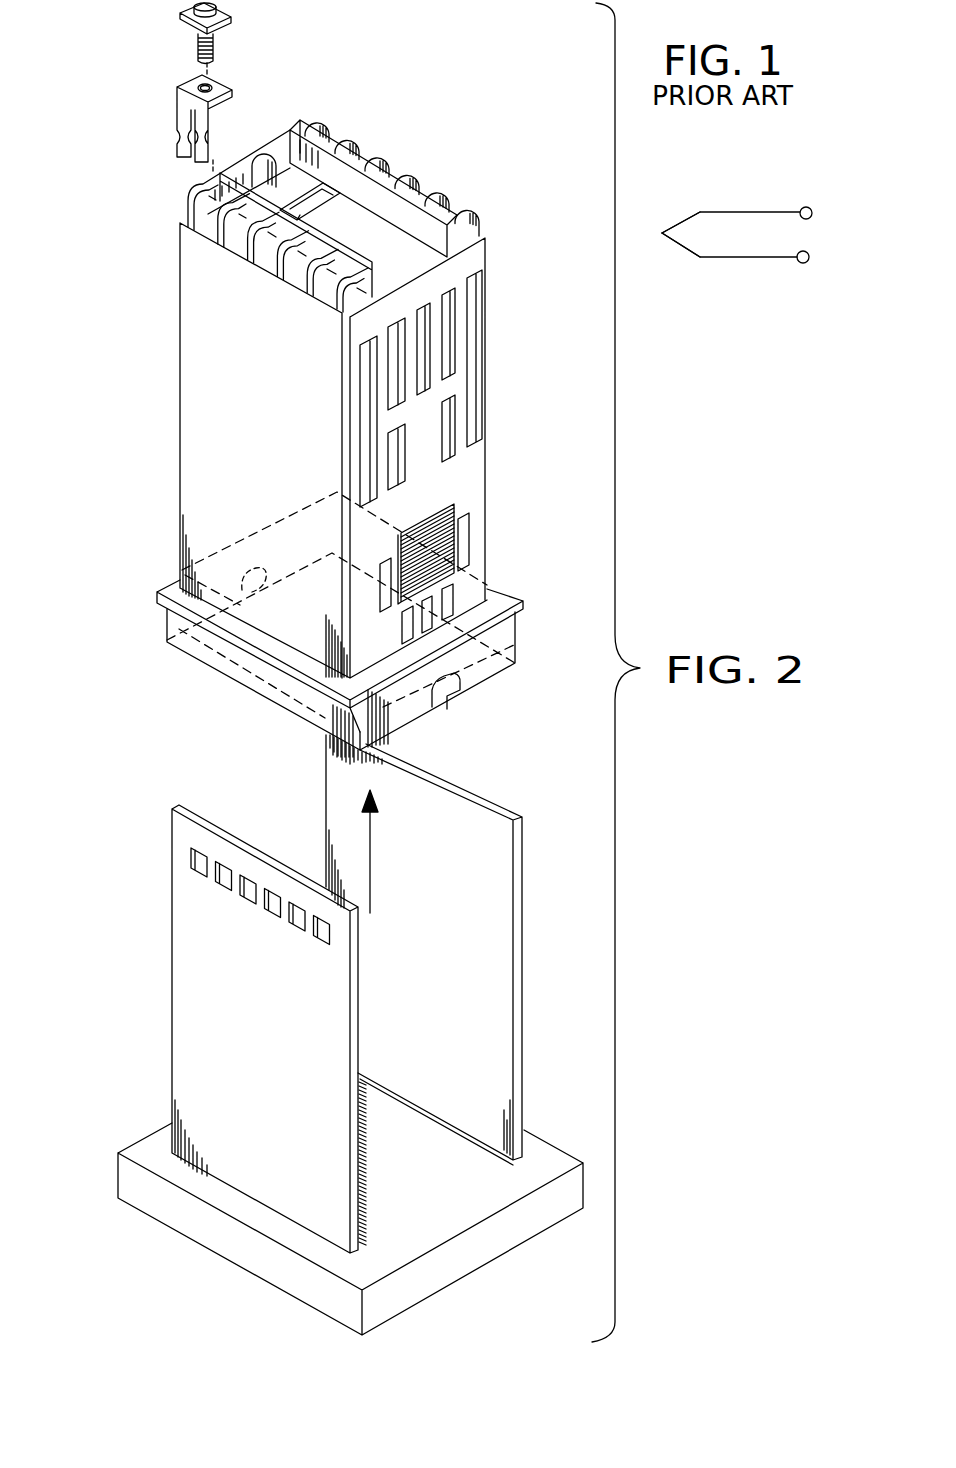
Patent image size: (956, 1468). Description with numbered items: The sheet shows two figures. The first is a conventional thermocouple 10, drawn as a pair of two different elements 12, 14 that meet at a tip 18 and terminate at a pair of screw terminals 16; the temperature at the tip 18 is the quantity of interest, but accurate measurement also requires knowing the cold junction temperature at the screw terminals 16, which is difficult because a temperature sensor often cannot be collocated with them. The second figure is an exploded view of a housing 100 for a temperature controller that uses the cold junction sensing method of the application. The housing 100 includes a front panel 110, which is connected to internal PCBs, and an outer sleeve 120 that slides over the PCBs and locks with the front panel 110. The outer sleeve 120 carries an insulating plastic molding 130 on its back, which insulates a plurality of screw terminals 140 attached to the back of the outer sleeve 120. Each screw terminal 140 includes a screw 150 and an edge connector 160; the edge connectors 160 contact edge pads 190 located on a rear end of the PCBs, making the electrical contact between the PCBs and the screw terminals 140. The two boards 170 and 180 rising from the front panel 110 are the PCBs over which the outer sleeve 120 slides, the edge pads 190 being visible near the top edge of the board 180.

In FIG. 1, the thermocouple 10 is at (737, 230).
In FIG. 1, the element 12 is at (710, 210).
In FIG. 1, the element 14 is at (720, 258).
In FIG. 1, the screw terminals 16 is at (816, 228).
In FIG. 1, the tip 18 is at (650, 243).
In FIG. 2, the housing 100 is at (158, 440).
In FIG. 2, the front panel 110 is at (197, 1240).
In FIG. 2, the outer sleeve 120 is at (213, 317).
In FIG. 2, the insulating plastic molding 130 is at (383, 163).
In FIG. 2, the screw terminals 140 is at (178, 220).
In FIG. 2, the screw 150 is at (231, 15).
In FIG. 2, the edge connector 160 is at (185, 103).
In FIG. 2, the rear circuit board 170 is at (520, 1032).
In FIG. 2, the front circuit board 180 is at (262, 1029).
In FIG. 2, the edge pads 190 is at (191, 860).